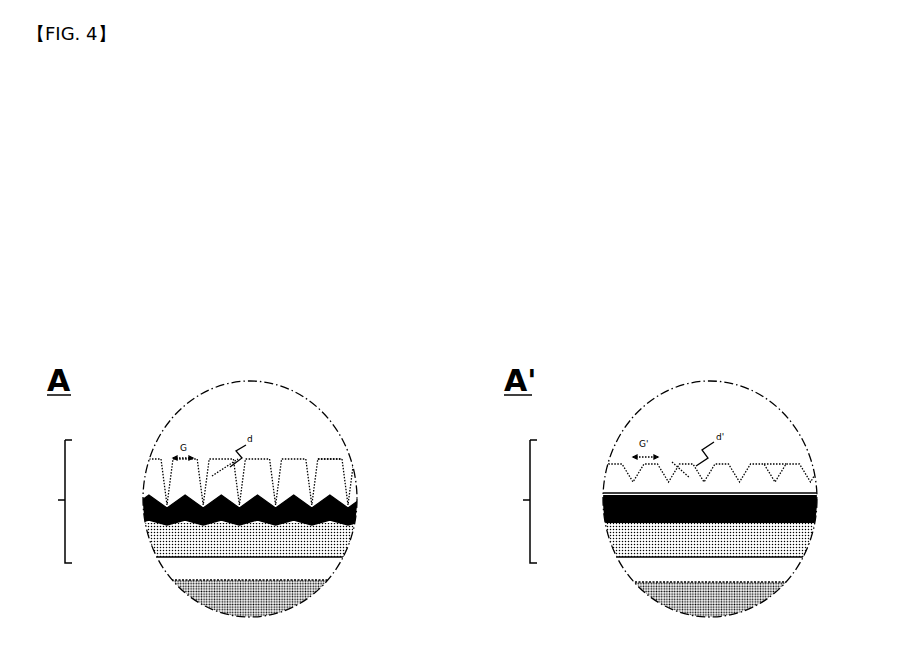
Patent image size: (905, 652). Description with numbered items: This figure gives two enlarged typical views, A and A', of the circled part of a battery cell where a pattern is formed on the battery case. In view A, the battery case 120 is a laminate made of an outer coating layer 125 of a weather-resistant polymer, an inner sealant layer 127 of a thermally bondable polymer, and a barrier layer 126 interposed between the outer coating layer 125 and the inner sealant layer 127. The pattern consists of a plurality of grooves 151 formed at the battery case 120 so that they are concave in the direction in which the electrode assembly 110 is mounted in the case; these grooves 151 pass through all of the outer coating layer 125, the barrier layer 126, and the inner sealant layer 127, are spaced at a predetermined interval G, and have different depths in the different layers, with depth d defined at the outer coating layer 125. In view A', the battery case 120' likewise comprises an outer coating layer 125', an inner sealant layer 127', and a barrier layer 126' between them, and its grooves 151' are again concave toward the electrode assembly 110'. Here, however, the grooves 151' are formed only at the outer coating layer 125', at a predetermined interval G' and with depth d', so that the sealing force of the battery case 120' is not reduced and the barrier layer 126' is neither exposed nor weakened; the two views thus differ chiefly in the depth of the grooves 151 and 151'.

The electrode assembly 110 is at (269, 600).
The battery case 120 is at (51, 501).
The outer coating layer 125 is at (246, 478).
The barrier layer 126 is at (240, 509).
The inner sealant layer 127 is at (219, 540).
The grooves 151 is at (348, 426).
The electrode assembly 110' is at (740, 602).
The battery case 120' is at (513, 501).
The outer coating layer 125' is at (686, 466).
The barrier layer 126' is at (679, 508).
The inner sealant layer 127' is at (679, 540).
The grooves 151' is at (803, 428).